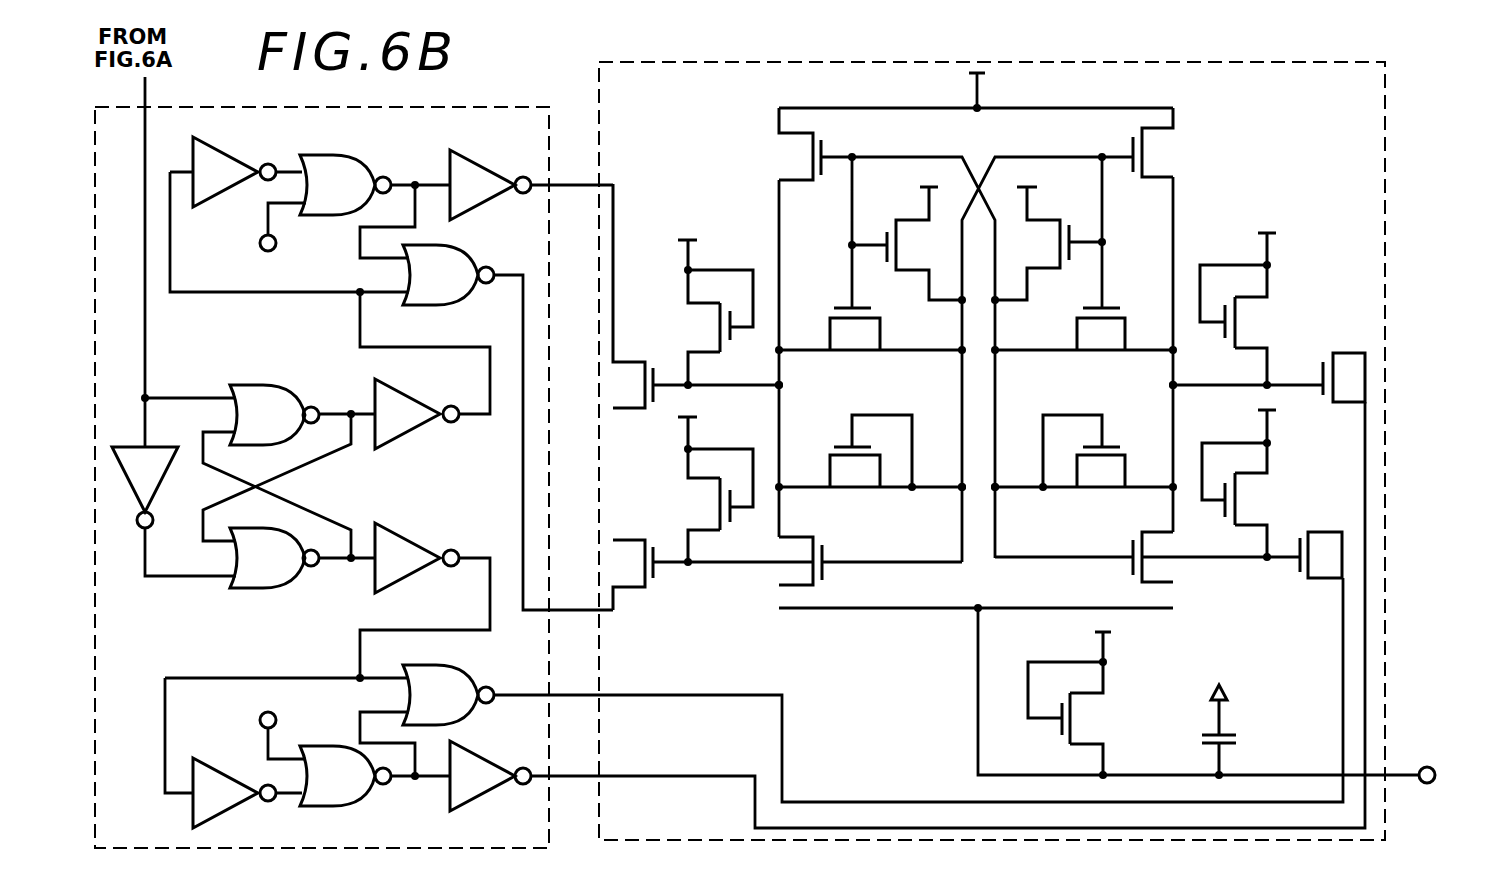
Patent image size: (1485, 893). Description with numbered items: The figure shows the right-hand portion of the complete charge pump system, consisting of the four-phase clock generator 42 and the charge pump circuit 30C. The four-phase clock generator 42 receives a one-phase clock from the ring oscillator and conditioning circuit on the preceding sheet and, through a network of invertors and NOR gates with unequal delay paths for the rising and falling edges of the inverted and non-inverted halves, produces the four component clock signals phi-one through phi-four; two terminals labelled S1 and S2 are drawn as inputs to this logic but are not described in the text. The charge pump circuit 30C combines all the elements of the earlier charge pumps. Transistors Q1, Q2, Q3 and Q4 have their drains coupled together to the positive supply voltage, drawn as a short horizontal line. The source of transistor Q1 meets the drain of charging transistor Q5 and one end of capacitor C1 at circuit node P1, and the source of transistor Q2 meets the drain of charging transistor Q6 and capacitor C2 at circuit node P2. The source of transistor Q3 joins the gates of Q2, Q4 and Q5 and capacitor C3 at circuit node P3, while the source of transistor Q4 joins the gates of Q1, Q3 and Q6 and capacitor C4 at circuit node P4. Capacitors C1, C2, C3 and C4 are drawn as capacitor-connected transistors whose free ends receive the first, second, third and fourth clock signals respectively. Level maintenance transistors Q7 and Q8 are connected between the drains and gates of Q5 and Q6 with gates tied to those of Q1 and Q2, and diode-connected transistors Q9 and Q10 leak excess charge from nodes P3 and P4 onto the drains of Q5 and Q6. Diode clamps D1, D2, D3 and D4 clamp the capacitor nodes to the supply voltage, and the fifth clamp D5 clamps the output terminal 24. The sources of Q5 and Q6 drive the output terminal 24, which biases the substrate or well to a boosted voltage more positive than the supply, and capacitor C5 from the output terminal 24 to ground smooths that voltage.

The four-phase clock generator 42 is at (549, 107).
The charge pump circuit 30C is at (1385, 197).
The output terminal 24 is at (1431, 783).
The transistor Q1 is at (806, 144).
The transistor Q2 is at (1146, 142).
The transistor Q3 is at (905, 243).
The transistor Q4 is at (1050, 243).
The charging transistor Q5 is at (870, 563).
The charging transistor Q6 is at (1084, 561).
The first level maintenance transistor Q7 is at (870, 349).
The second level maintenance transistor Q8 is at (1084, 348).
The first incremental charging diode-connected transistor Q9 is at (870, 467).
The second incremental charging diode-connected transistor Q10 is at (1084, 466).
The diode clamp D1 is at (709, 314).
The diode clamp D2 is at (1243, 311).
The diode clamp D3 is at (707, 491).
The diode clamp D4 is at (1243, 485).
The fifth voltage clamp D5 is at (1075, 705).
The capacitor C1 is at (696, 311).
The capacitor C2 is at (1269, 364).
The capacitor C3 is at (713, 561).
The capacitor C4 is at (1242, 542).
The capacitor C5 is at (1236, 732).
The circuit node P1 is at (783, 384).
The circuit node P2 is at (1172, 383).
The circuit node P3 is at (960, 490).
The circuit node P4 is at (997, 490).
The control input S1 is at (268, 707).
The control input S2 is at (267, 259).